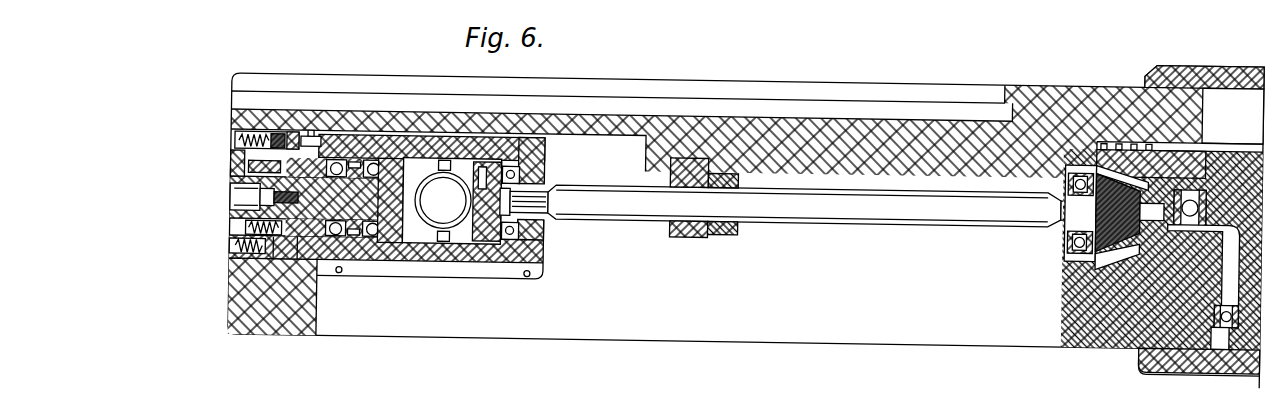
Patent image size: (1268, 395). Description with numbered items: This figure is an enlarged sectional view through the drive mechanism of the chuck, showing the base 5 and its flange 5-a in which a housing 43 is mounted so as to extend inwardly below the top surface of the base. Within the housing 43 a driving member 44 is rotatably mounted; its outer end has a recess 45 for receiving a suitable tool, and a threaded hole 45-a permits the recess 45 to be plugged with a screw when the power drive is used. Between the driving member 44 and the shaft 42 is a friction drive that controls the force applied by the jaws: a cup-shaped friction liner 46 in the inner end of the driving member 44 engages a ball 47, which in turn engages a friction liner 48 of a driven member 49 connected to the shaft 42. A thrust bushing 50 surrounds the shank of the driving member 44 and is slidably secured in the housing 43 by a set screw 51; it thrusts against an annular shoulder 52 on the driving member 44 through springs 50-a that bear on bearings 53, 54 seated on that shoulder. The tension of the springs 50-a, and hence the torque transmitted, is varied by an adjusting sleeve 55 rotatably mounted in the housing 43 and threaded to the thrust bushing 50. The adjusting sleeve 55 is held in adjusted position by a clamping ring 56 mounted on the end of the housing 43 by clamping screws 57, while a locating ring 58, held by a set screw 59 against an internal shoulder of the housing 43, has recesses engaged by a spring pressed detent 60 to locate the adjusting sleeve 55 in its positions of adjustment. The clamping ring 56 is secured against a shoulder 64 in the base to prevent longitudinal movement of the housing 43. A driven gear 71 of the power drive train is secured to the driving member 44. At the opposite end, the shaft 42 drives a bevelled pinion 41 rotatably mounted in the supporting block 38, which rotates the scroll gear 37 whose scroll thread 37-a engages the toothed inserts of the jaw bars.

The base 5 is at (236, 120).
The flange 5-a is at (313, 331).
The scroll gear 37 is at (1222, 135).
The scroll thread 37-a is at (1122, 127).
The supporting block 38 is at (1064, 263).
The bevelled pinion 41 is at (1100, 254).
The shaft 42 is at (868, 205).
The housing 43 is at (547, 243).
The driving member 44 is at (232, 177).
The recess 45 is at (238, 203).
The threaded hole 45-a is at (236, 191).
The cup-shaped friction liner 46 is at (425, 239).
The ball 47 is at (448, 228).
The friction liner 48 is at (468, 241).
The driven member 49 is at (515, 262).
The thrust bushing 50 is at (318, 288).
The springs 50-a is at (339, 271).
The set screw 51 is at (312, 129).
The annular shoulder 52 is at (405, 231).
The bearing 53 is at (338, 160).
The bearing 54 is at (375, 160).
The adjusting sleeve 55 is at (234, 160).
The clamping ring 56 is at (232, 236).
The clamping screws 57 is at (232, 249).
The locating ring 58 is at (300, 259).
The set screw 59 is at (296, 133).
The spring pressed detent 60 is at (276, 259).
The shoulder 64 is at (252, 266).
The driven gear 71 is at (384, 130).